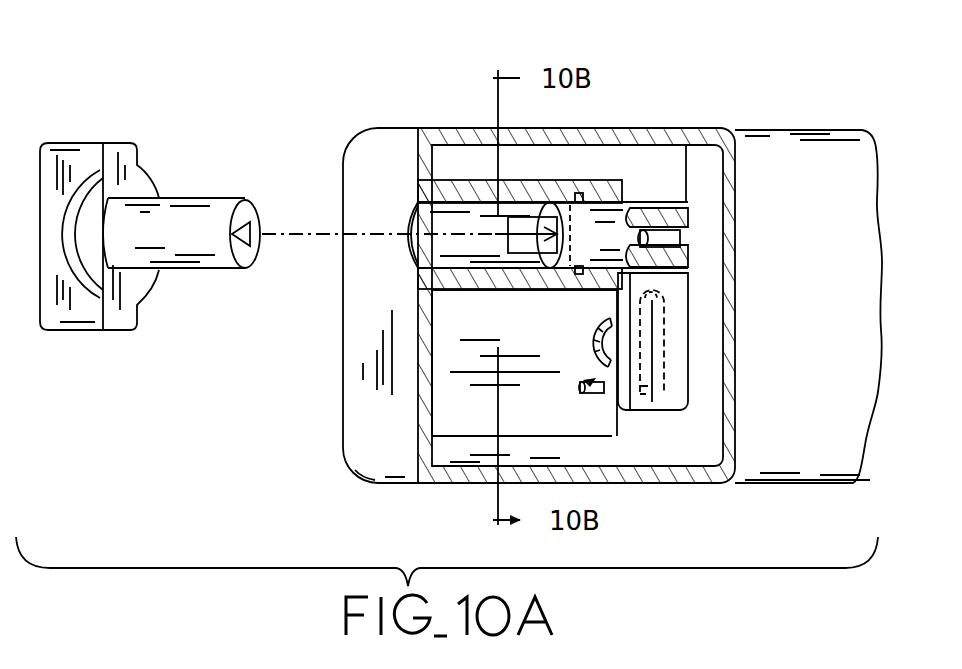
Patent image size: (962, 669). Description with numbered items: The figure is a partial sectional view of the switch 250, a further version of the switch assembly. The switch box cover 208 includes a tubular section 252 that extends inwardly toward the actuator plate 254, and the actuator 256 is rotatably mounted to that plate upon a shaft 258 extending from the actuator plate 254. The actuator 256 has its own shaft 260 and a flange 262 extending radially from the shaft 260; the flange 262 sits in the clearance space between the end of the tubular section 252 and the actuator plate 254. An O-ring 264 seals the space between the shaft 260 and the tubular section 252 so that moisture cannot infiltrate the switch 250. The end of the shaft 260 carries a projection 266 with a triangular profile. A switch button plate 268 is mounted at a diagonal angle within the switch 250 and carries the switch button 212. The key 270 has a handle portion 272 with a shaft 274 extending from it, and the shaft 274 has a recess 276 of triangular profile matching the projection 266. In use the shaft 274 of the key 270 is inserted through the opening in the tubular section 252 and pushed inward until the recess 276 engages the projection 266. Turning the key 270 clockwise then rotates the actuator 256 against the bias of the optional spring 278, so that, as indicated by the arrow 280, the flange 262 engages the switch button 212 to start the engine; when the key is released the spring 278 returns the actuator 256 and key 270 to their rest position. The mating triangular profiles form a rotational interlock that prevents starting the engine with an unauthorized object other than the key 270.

The switch box cover 208 is at (365, 408).
The switch button 212 is at (593, 352).
The switch 250 is at (387, 86).
The tubular section 252 is at (547, 190).
The actuator plate 254 is at (735, 368).
The actuator 256 is at (652, 194).
The shaft 258 is at (640, 240).
The shaft 260 is at (600, 248).
The flange 262 is at (680, 328).
The O-ring 264 is at (580, 198).
The projection 266 is at (507, 242).
The switch button plate 268 is at (448, 337).
The key 270 is at (114, 124).
The handle portion 272 is at (53, 177).
The shaft 274 is at (182, 212).
The recess 276 is at (239, 204).
The spring 278 is at (637, 352).
The arrow 280 is at (610, 390).